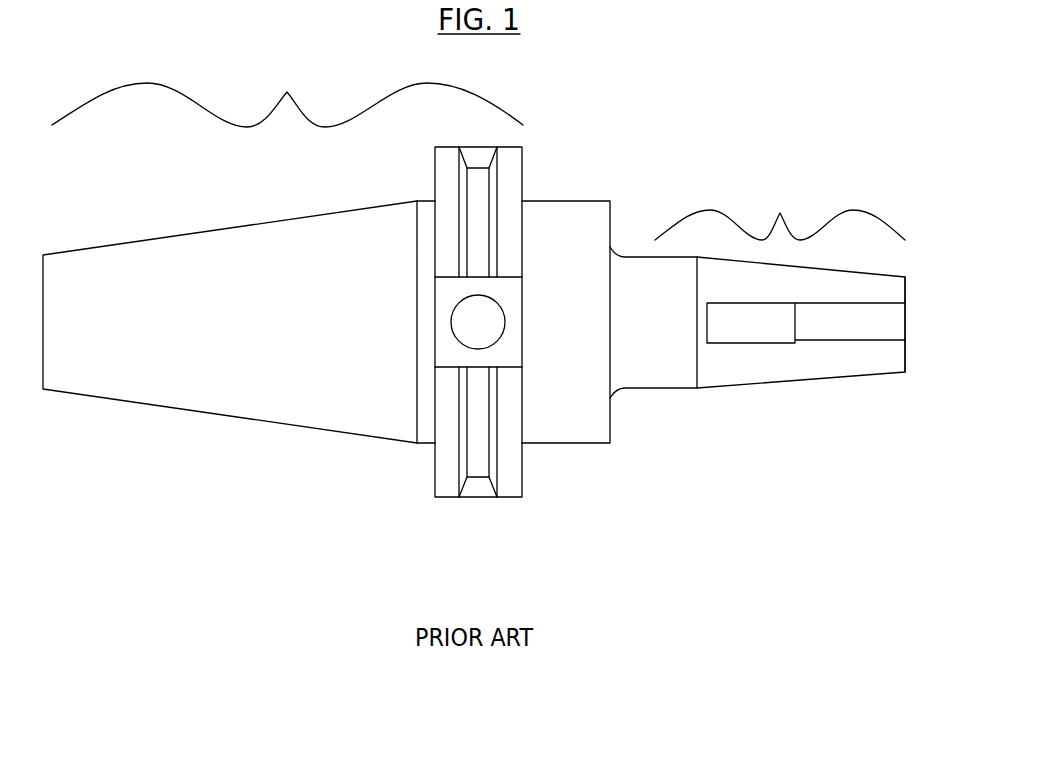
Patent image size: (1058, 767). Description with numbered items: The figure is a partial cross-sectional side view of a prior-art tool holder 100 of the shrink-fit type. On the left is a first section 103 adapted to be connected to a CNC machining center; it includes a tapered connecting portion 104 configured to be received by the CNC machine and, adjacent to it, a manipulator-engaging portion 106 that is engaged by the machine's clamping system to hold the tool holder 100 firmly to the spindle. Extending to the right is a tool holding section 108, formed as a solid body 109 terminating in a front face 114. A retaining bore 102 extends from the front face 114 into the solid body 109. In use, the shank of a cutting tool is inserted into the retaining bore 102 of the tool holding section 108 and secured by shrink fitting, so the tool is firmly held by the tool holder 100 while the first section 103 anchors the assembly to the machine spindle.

The tool holder 100 is at (574, 185).
The retaining bore 102 is at (863, 320).
The first section 103 is at (287, 93).
The tapered connecting portion 104 is at (198, 280).
The manipulator-engaging portion 106 is at (435, 508).
The tool holding section 108 is at (780, 210).
The solid body 109 is at (711, 365).
The front face 114 is at (905, 277).